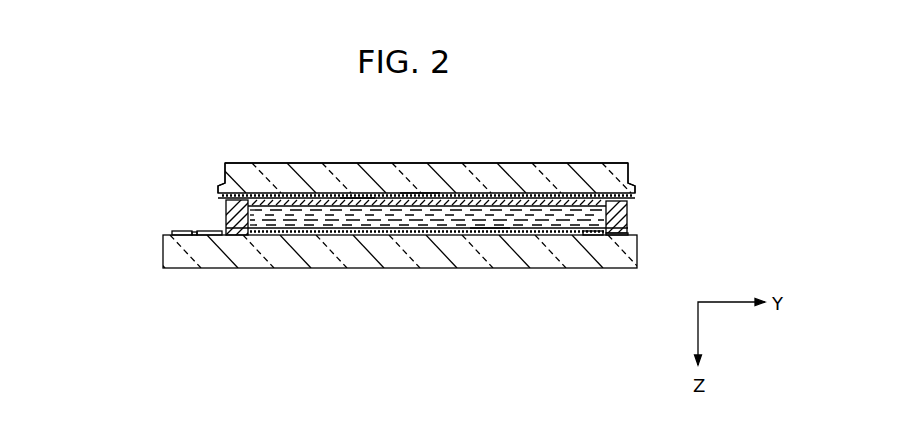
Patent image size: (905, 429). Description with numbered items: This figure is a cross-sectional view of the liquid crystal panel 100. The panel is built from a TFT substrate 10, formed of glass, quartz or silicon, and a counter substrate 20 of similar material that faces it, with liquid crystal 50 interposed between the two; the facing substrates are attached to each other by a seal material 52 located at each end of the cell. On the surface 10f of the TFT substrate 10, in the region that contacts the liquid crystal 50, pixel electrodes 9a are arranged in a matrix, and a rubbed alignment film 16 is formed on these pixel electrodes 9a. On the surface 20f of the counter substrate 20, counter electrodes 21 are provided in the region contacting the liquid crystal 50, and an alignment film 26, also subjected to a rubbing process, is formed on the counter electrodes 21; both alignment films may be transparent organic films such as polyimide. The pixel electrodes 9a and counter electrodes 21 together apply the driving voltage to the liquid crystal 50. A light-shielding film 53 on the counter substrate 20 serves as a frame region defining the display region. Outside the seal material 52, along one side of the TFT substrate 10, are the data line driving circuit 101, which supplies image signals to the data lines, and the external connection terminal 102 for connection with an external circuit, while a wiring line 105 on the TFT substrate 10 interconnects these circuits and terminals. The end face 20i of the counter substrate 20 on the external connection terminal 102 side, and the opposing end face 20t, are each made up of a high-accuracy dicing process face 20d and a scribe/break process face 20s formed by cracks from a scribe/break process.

The liquid crystal panel 100 is at (609, 110).
The TFT substrate 10 is at (435, 256).
The surface of the TFT substrate 10f is at (482, 234).
The pixel electrodes 9a is at (311, 236).
The alignment film 16 is at (629, 233).
The counter substrate 20 is at (310, 176).
The dicing process face 20d is at (222, 165).
The scribe/break process face 20s is at (216, 187).
The end face of the counter substrate 20i is at (135, 100).
The end face of the counter substrate 20t is at (715, 100).
The surface of the counter substrate 20f is at (419, 196).
The counter electrodes 21 is at (357, 195).
The alignment film 26 is at (473, 198).
The liquid crystal 50 is at (393, 216).
The seal material 52 is at (238, 235).
The light-shielding film 53 is at (274, 193).
The data line driving circuit 101 is at (206, 236).
The external connection terminal 102 is at (177, 233).
The wiring line 105 is at (196, 232).